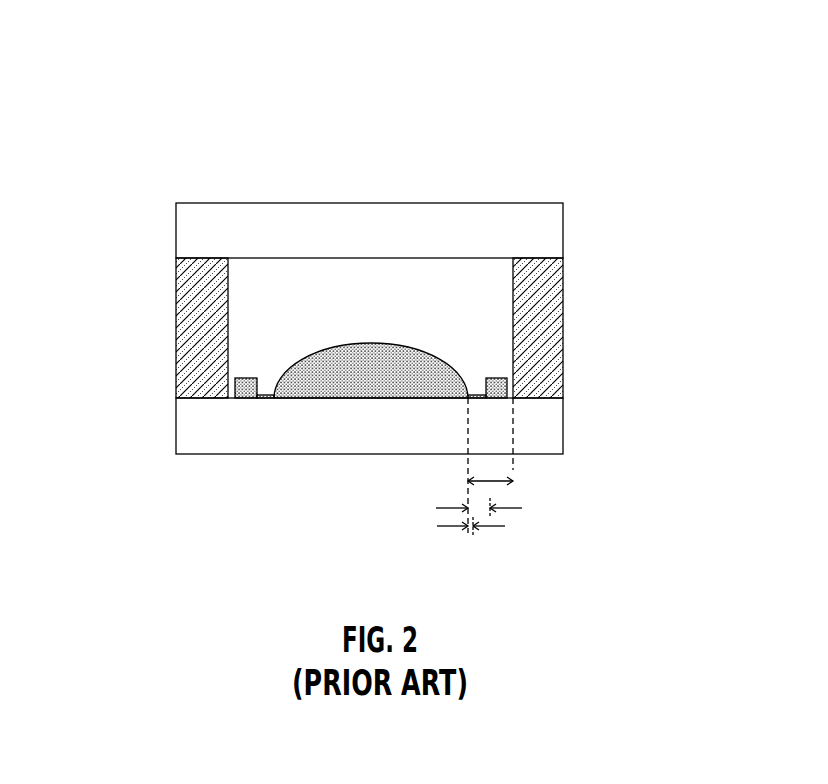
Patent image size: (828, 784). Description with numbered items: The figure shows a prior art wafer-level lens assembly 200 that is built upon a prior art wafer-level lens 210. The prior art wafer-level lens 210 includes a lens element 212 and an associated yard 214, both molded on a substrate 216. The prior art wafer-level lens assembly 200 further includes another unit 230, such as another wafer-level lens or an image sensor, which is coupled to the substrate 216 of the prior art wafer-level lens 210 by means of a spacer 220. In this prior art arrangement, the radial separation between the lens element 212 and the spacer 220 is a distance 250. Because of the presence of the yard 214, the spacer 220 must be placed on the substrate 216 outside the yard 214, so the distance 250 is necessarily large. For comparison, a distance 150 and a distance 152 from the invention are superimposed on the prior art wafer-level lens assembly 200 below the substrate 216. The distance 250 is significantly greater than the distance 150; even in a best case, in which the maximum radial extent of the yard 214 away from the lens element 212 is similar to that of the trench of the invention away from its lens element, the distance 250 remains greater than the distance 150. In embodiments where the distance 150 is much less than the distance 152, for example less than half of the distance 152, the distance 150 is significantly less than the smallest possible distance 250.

The prior art wafer-level lens assembly 200 is at (152, 62).
The prior art wafer-level lens 210 is at (606, 429).
The unit 230 is at (176, 233).
The spacer 220 is at (176, 318).
The substrate 216 is at (176, 426).
The yard 214 is at (243, 377).
The lens element 212 is at (402, 343).
The distance 250 is at (493, 486).
The distance 150 is at (453, 508).
The distance 152 is at (448, 526).